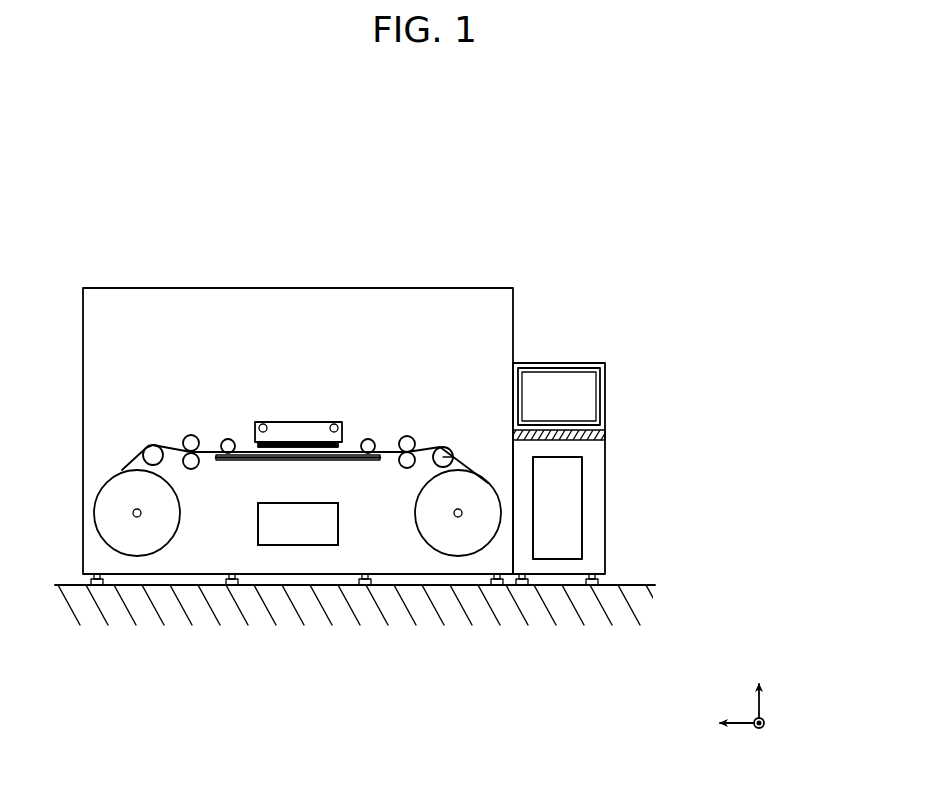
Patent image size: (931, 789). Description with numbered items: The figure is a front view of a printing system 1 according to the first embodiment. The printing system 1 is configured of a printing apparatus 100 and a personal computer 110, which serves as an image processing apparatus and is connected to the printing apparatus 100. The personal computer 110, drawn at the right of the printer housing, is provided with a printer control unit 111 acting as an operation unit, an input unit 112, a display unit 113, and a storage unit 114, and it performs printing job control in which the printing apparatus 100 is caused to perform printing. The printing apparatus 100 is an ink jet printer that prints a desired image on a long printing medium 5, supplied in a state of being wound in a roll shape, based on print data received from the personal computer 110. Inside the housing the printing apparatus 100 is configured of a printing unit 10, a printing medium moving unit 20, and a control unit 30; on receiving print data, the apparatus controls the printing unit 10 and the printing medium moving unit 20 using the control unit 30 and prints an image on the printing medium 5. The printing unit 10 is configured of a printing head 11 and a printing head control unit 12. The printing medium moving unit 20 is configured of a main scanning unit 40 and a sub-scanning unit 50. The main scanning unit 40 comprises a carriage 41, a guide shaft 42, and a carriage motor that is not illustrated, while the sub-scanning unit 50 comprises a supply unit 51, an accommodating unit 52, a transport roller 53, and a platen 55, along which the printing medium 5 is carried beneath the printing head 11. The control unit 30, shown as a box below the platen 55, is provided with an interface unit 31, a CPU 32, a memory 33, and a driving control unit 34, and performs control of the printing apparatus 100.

The printing system 1 is at (561, 213).
The printing apparatus 100 is at (117, 263).
The personal computer 110 is at (567, 351).
The display unit 113 is at (600, 392).
The input unit 112 is at (600, 435).
The printer control unit 111 is at (580, 508).
The storage unit 114 is at (557, 508).
The printing medium moving unit 20 is at (216, 310).
The sub-scanning unit 50 is at (171, 383).
The accommodating unit 52 is at (185, 533).
The supply unit 51 is at (411, 528).
The transport roller 53 is at (228, 438).
The printing medium 5 is at (422, 450).
The printing unit 10 is at (350, 401).
The main scanning unit 40 is at (226, 366).
The guide shaft 42 is at (263, 425).
The carriage 41 is at (292, 432).
The printing head 11 is at (304, 443).
The printing head control unit 12 is at (298, 444).
The platen 55 is at (310, 460).
The control unit 30 is at (292, 546).
The interface unit 31 is at (298, 524).
The CPU 32 is at (298, 524).
The memory 33 is at (298, 524).
The driving control unit 34 is at (298, 524).